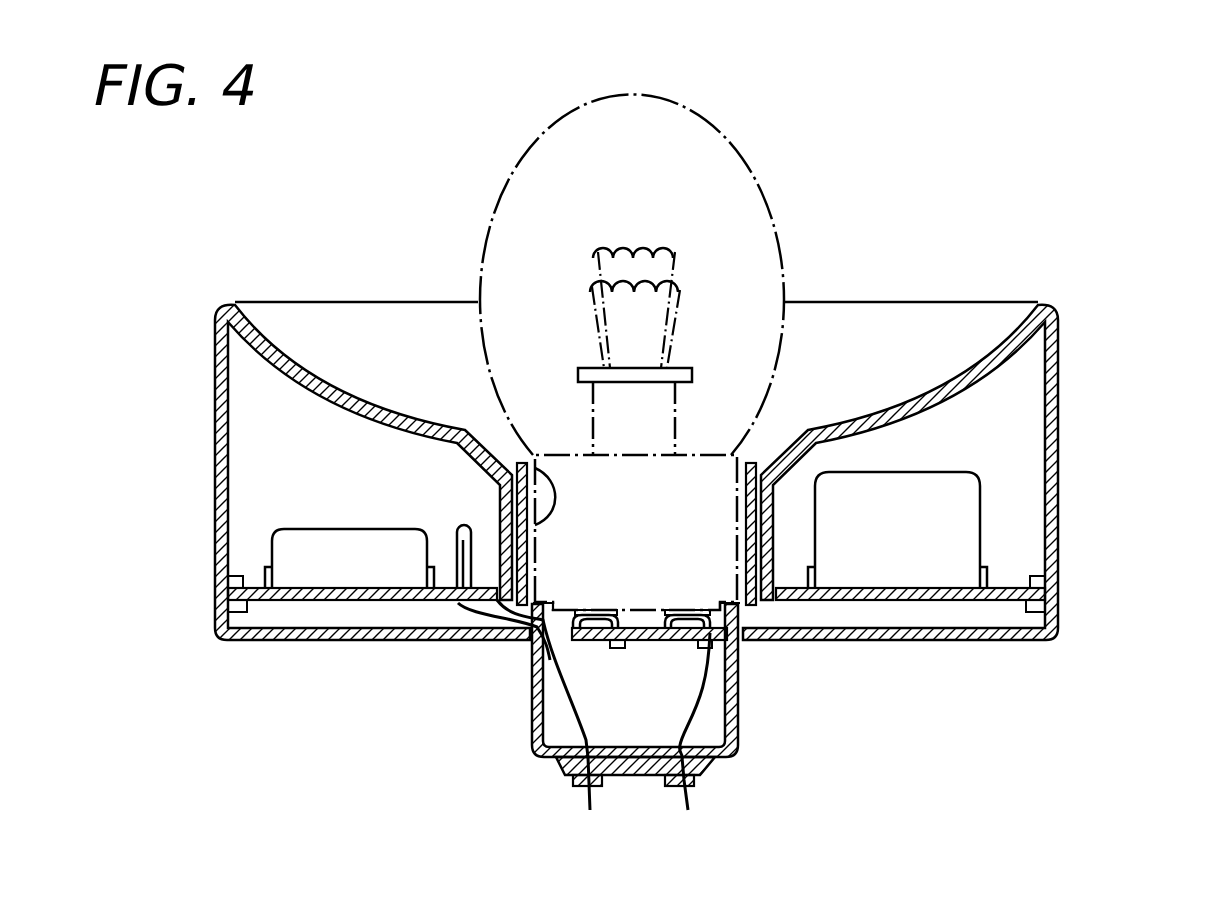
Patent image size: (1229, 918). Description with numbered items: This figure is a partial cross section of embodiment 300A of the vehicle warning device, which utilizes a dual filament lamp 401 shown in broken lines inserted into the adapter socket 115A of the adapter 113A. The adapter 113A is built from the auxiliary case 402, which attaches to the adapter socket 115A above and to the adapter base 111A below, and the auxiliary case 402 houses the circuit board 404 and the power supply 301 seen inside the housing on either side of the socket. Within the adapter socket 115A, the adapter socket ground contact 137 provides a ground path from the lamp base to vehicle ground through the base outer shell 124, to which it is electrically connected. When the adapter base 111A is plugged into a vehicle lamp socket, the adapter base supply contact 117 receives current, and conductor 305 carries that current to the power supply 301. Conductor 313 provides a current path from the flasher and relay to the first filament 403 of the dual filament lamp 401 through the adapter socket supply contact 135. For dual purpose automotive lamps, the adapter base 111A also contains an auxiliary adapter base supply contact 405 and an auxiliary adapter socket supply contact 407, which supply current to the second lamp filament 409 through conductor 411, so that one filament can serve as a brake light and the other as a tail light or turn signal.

The embodiment of the vehicle warning device 300A is at (709, 460).
The dual filament lamp 401 is at (702, 270).
The filament 403 is at (765, 206).
The second lamp filament 409 is at (777, 244).
The auxiliary case 402 is at (692, 426).
The adapter socket ground contact 137 is at (445, 366).
The adapter socket 115A is at (725, 467).
The power supply 301 is at (366, 510).
The circuit board 404 is at (983, 528).
The adapter 113A is at (709, 472).
The conductor 313 is at (522, 655).
The conductor 305 is at (563, 667).
The adapter socket supply contact 135 is at (494, 705).
The base outer shell 124 is at (588, 727).
The adapter base supply contact 117 is at (558, 833).
The auxiliary adapter base supply contact 405 is at (733, 821).
The auxiliary adapter socket supply contact 407 is at (777, 654).
The conductor 411 is at (788, 721).
The adapter base 111A is at (738, 765).